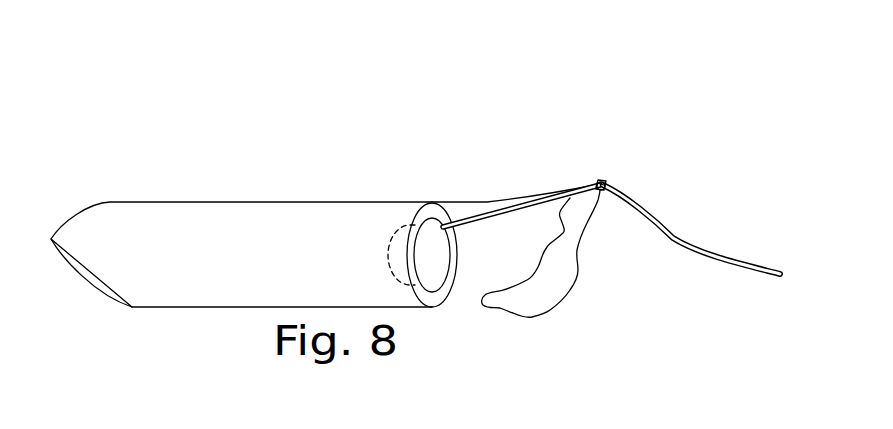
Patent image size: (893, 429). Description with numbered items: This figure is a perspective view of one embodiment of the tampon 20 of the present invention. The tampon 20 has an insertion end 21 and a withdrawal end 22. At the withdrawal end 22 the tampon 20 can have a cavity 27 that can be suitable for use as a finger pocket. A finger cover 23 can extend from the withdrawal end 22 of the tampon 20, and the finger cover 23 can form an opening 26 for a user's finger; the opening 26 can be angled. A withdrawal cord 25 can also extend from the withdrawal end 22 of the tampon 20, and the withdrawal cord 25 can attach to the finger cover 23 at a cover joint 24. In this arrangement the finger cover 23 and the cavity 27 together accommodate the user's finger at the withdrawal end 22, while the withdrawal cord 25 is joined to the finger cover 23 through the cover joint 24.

The tampon 20 is at (191, 103).
The insertion end 21 is at (62, 180).
The withdrawal end 22 is at (395, 179).
The finger cover 23 is at (502, 252).
The cover joint 24 is at (601, 160).
The withdrawal cord 25 is at (713, 248).
The opening 26 is at (635, 304).
The cavity 27 is at (430, 255).